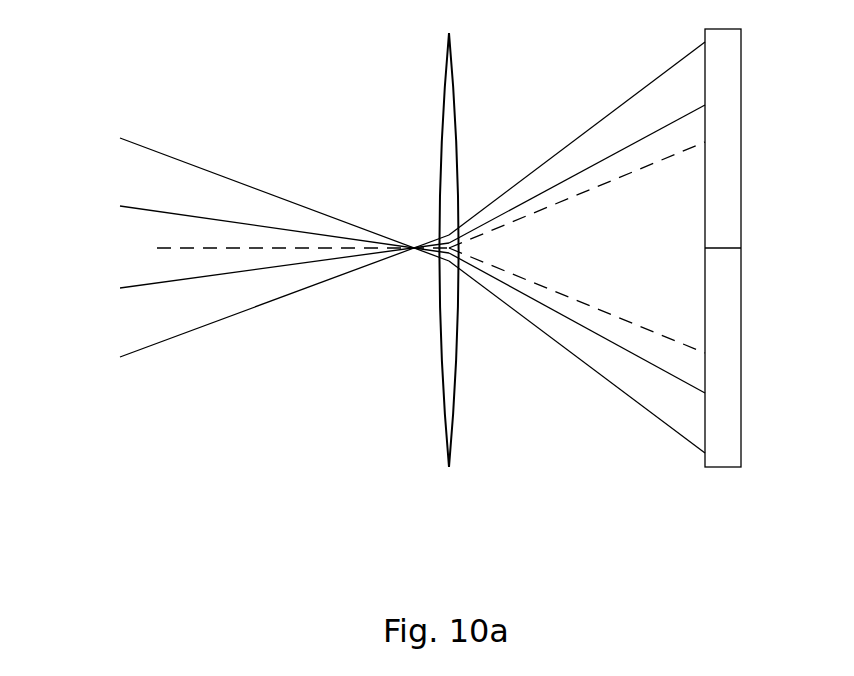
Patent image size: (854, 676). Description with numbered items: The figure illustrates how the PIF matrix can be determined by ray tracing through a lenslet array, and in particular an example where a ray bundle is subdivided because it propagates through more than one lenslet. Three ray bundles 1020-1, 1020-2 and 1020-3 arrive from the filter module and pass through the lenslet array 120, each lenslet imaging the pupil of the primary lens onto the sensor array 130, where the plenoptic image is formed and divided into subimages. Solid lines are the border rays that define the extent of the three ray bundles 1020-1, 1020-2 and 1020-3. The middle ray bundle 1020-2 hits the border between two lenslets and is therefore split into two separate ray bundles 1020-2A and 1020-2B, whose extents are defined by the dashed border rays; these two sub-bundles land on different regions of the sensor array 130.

The lenslet array 120 is at (449, 467).
The sensor array 130 is at (722, 467).
The ray bundle 1020-1 is at (532, 98).
The middle ray bundle 1020-2 is at (522, 380).
The ray bundle 1020-3 is at (265, 199).
The ray bundle 1020-2A is at (586, 191).
The ray bundle 1020-2B is at (577, 301).